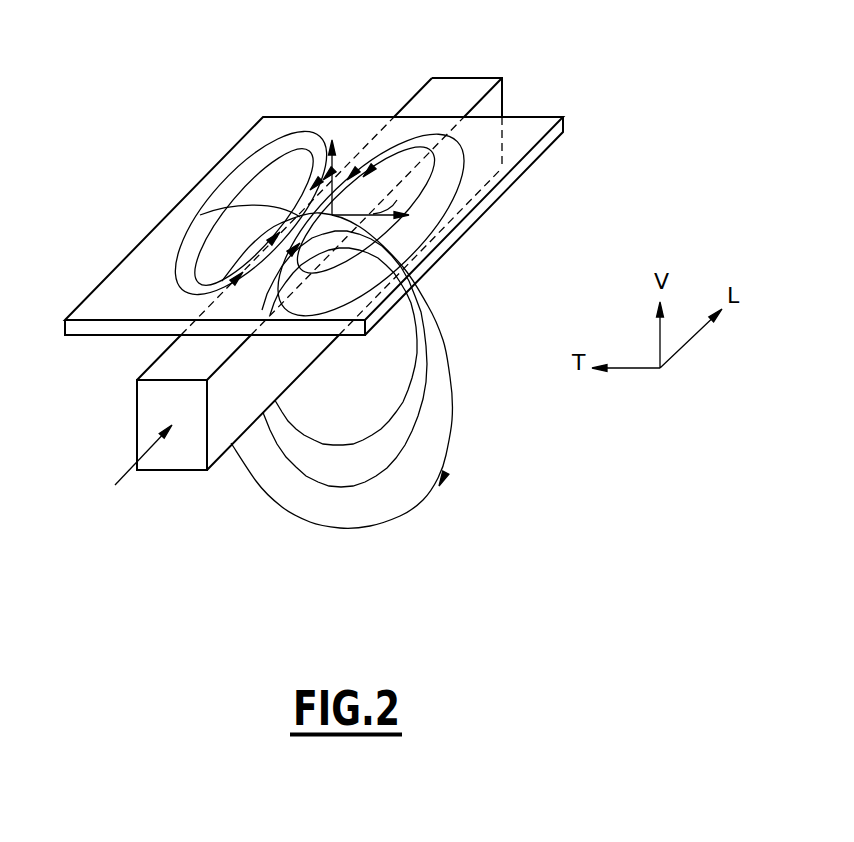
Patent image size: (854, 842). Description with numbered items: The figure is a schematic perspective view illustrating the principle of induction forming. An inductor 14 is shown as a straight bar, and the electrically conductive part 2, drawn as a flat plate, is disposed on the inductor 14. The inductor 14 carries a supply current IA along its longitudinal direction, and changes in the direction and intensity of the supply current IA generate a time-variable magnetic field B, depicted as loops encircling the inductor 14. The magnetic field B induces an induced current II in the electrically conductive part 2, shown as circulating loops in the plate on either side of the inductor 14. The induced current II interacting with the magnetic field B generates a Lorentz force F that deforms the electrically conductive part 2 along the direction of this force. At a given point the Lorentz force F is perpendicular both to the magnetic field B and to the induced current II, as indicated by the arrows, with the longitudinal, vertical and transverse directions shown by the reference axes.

The electrically conductive part 2 is at (130, 290).
The inductor 14 is at (470, 85).
The magnetic field B is at (346, 358).
The induced current II is at (583, 152).
The Lorentz force F is at (358, 160).
The supply current IA is at (143, 470).